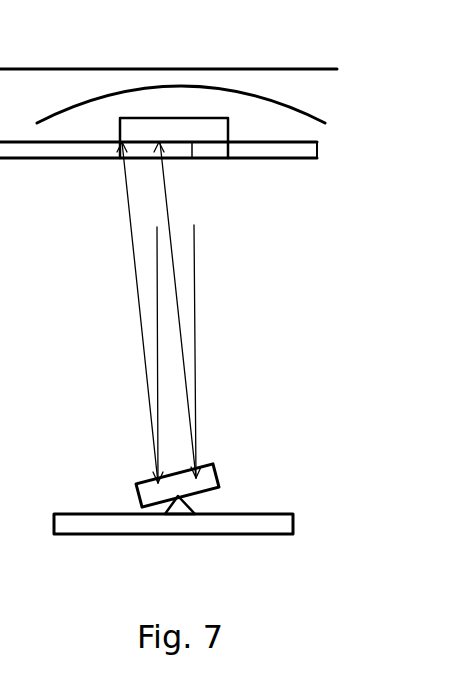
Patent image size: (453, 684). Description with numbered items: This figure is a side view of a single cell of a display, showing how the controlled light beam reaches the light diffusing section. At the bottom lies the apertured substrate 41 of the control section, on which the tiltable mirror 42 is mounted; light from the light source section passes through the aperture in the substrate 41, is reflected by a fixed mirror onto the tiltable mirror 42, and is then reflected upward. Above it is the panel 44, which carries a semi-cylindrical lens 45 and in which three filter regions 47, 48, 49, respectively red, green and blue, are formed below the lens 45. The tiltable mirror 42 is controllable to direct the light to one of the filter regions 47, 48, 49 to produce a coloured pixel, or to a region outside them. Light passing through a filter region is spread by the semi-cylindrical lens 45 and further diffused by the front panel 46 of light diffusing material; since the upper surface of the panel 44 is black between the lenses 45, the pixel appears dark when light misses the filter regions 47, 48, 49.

The apertured substrate 41 is at (102, 523).
The tiltable mirror 42 is at (145, 495).
The panel 44 is at (320, 148).
The semi-cylindrical lens 45 is at (190, 128).
The front panel 46 is at (138, 82).
The red filter region 47 is at (140, 152).
The green filter region 48 is at (178, 157).
The blue filter region 49 is at (215, 150).